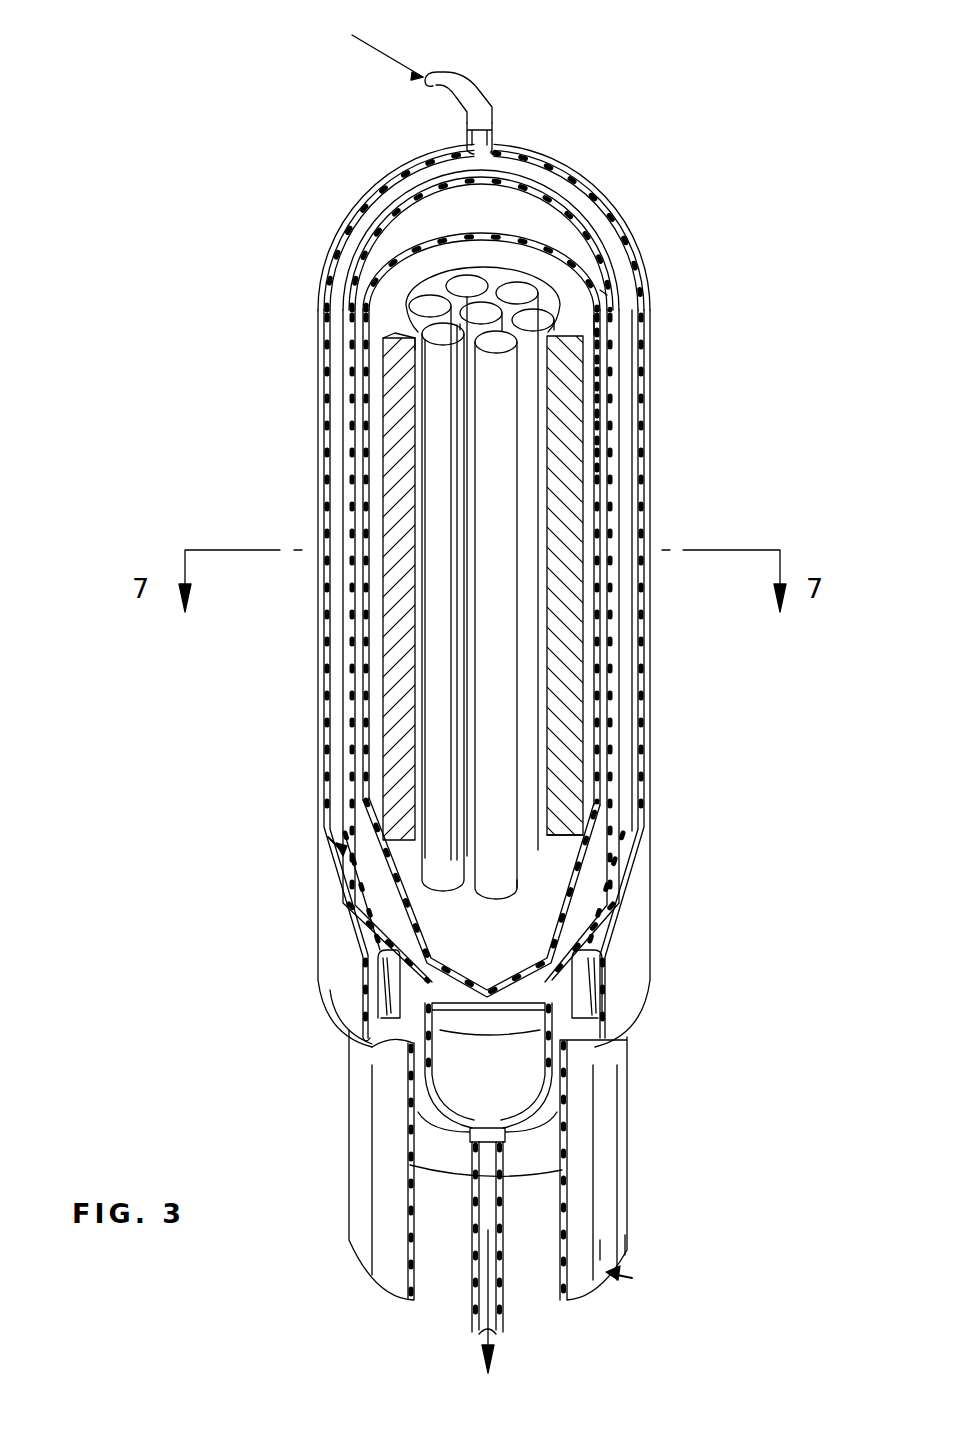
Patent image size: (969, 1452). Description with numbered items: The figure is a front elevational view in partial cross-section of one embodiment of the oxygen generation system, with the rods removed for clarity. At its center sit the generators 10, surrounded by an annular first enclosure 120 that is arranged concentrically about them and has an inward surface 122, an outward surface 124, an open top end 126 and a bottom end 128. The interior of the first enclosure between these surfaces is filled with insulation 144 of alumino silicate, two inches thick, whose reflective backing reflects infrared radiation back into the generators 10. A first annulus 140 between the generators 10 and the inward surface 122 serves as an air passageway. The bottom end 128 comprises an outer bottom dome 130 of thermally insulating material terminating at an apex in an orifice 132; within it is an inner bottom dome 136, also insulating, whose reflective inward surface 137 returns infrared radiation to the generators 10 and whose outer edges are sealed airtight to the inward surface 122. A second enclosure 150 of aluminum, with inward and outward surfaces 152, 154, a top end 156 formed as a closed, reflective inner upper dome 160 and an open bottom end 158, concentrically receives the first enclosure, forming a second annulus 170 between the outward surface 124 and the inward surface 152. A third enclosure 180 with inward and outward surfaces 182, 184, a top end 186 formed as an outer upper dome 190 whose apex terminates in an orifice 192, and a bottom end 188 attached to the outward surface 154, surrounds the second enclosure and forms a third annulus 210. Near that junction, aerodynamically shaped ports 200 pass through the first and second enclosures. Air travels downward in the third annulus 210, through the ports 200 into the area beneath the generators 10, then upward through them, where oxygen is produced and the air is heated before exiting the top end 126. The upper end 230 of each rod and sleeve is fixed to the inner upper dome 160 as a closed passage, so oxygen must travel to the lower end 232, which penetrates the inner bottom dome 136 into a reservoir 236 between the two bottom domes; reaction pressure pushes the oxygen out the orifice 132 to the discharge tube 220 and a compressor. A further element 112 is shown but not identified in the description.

The generators 10 is at (500, 505).
The tubes 112 is at (494, 450).
The first enclosure 120 is at (555, 1110).
The inward surface 122 is at (589, 328).
The outward surface 124 is at (603, 303).
The top end 126 is at (548, 262).
The bottom end 128 is at (545, 868).
The outer bottom dome 130 is at (570, 1076).
The orifice 132 is at (472, 1135).
The inner bottom dome 136 is at (540, 985).
The inward surface 137 is at (512, 975).
The first annulus 140 is at (572, 284).
The insulation 144 is at (385, 300).
The second enclosure 150 is at (603, 1148).
The inward surface 152 is at (632, 1278).
The outward surface 154 is at (598, 1224).
The top end 156 is at (540, 190).
The bottom end 158 is at (626, 1246).
The inner upper dome 160 is at (590, 212).
The second annulus 170 is at (597, 398).
The third enclosure 180 is at (328, 838).
The inward surface 182 is at (355, 880).
The outward surface 184 is at (340, 925).
The top end 186 is at (425, 160).
The bottom end 188 is at (333, 994).
The outer upper dome 190 is at (365, 196).
The orifice 192 is at (497, 141).
The ports 200 is at (387, 987).
The third annulus 210 is at (335, 720).
The discharge tube 220 is at (470, 1312).
The upper end 230 is at (418, 292).
The lower end 232 is at (527, 870).
The reservoir 236 is at (492, 1038).